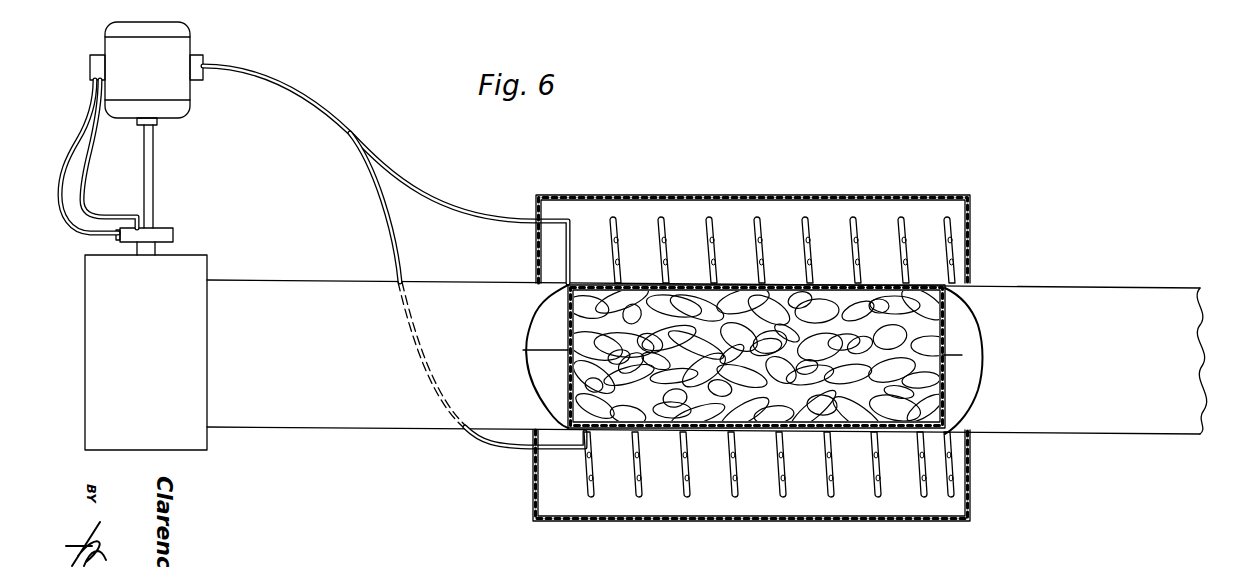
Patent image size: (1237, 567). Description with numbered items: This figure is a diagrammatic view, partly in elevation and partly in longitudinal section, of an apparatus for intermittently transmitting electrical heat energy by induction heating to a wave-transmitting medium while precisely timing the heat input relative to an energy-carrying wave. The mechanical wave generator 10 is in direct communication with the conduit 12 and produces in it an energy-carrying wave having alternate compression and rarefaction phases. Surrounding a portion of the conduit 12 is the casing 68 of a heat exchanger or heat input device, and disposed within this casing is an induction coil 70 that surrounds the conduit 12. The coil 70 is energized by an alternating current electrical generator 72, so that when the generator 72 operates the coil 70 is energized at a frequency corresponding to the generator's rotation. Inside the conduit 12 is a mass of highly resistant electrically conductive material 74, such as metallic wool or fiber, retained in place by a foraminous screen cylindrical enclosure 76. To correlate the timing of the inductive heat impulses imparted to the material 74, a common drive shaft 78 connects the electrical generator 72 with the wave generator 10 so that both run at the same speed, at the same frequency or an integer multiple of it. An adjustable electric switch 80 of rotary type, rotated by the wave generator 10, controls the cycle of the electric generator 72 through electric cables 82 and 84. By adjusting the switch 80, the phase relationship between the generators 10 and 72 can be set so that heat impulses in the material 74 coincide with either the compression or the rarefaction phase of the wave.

The mechanical wave generator 10 is at (195, 268).
The conduit 12 is at (323, 419).
The casing 68 is at (787, 194).
The induction coil 70 is at (690, 487).
The alternating current electrical generator 72 is at (180, 47).
The electrically conductive material 74 is at (942, 330).
The foraminous screen cylindrical enclosure 76 is at (570, 318).
The common drive shaft 78 is at (147, 172).
The adjustable electric switch 80 is at (157, 232).
The electric cable 82 is at (67, 163).
The electric cable 84 is at (85, 202).